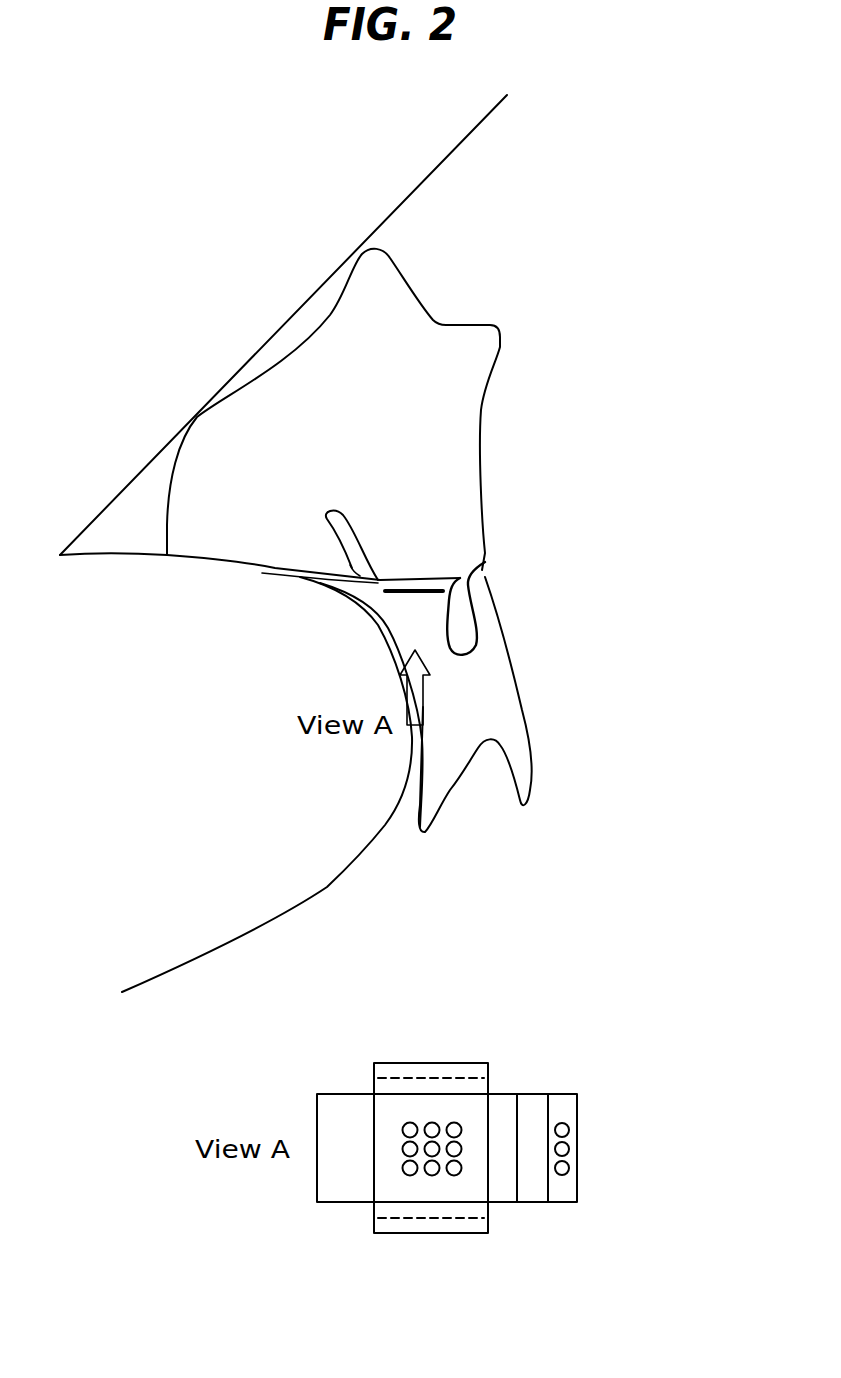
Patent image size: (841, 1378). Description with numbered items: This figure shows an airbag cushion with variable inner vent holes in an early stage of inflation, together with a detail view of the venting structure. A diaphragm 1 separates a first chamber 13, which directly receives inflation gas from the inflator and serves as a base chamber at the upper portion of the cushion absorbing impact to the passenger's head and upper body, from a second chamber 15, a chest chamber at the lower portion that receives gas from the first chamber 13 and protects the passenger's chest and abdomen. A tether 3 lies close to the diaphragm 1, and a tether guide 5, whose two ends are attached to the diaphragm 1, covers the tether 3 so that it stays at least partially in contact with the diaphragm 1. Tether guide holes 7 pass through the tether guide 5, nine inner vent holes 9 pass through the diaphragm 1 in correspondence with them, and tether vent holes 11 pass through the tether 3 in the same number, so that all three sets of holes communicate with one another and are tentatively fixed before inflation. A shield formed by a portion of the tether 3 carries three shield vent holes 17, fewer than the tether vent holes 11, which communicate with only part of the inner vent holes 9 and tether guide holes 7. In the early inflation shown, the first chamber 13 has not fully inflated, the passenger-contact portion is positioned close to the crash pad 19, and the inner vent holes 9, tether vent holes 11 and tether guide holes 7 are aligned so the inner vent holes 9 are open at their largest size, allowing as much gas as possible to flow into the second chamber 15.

The diaphragm 1 is at (342, 505).
The tether 3 is at (477, 623).
The tether guide 5 is at (410, 597).
The tether guide holes 7 is at (478, 1226).
The inner vent holes 9 is at (452, 1173).
The tether vent holes 11 is at (458, 1226).
The first chamber 13 is at (440, 354).
The second chamber 15 is at (468, 697).
The shield vent holes 17 is at (567, 1122).
The crash pad 19 is at (330, 887).